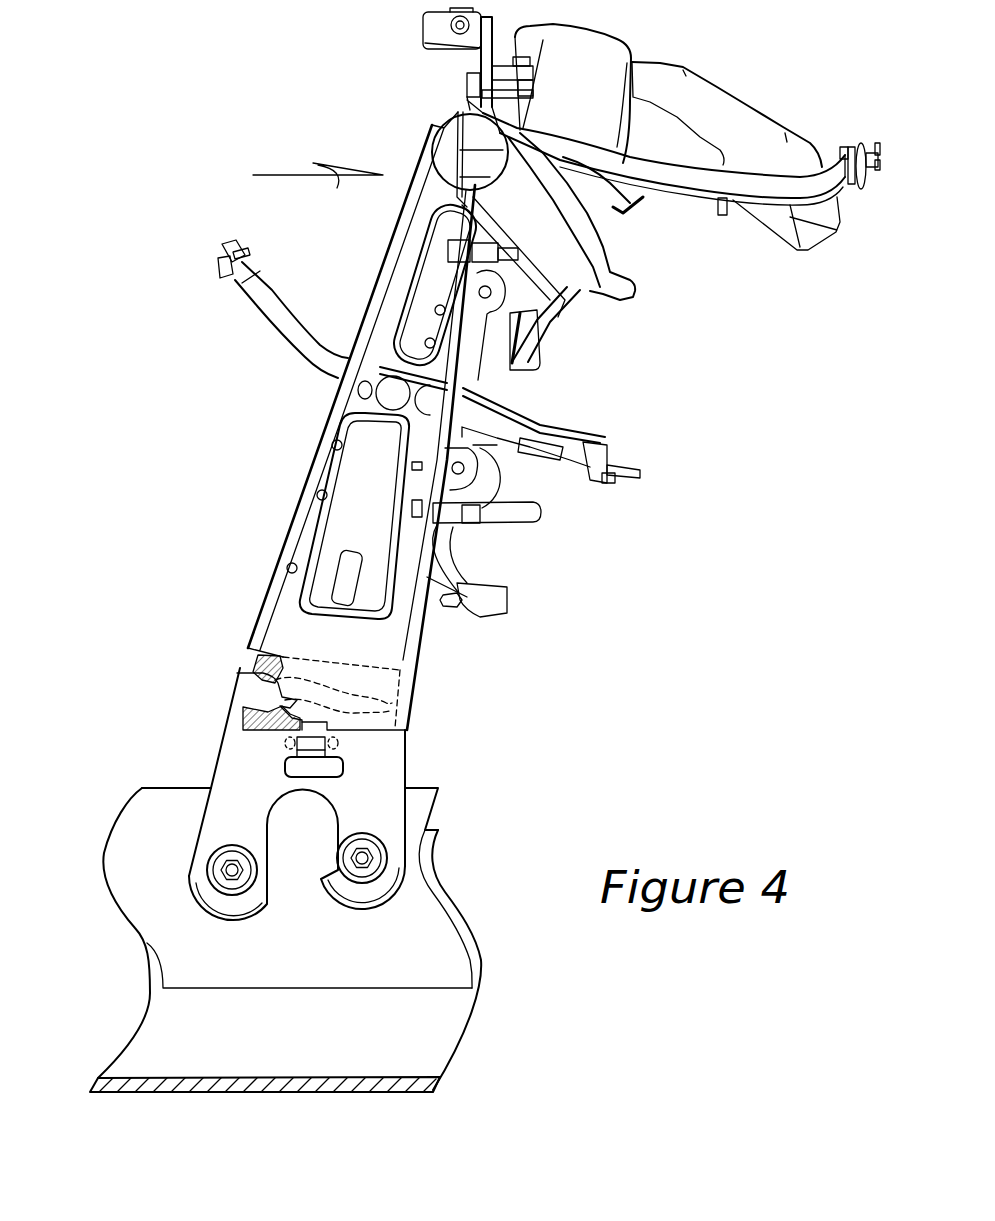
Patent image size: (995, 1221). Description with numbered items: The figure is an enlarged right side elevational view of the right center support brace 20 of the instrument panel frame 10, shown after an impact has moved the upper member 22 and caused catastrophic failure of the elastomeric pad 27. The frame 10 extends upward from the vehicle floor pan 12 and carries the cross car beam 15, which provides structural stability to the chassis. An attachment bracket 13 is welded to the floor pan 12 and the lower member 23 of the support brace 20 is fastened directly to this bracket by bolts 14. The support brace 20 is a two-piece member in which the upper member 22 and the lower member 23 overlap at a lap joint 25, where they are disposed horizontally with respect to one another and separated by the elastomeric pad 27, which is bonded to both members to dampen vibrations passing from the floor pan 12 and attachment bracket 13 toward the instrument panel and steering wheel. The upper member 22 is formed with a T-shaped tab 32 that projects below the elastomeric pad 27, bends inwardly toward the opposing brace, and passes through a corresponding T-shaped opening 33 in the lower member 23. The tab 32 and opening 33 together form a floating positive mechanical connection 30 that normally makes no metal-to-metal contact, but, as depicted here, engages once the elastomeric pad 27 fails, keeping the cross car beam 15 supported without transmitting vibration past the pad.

The frame 10 is at (240, 116).
The floor pan 12 is at (468, 1002).
The attachment bracket 13 is at (134, 877).
The bolts 14 is at (217, 857).
The cross car beam 15 is at (455, 125).
The center support brace 20 is at (200, 448).
The upper member 22 is at (403, 632).
The lower member 23 is at (398, 752).
The lap joint 25 is at (228, 608).
The elastomeric pad 27 is at (255, 720).
The floating positive mechanical connection 30 is at (525, 707).
The T-shaped tab 32 is at (290, 740).
The T-shaped opening 33 is at (387, 772).